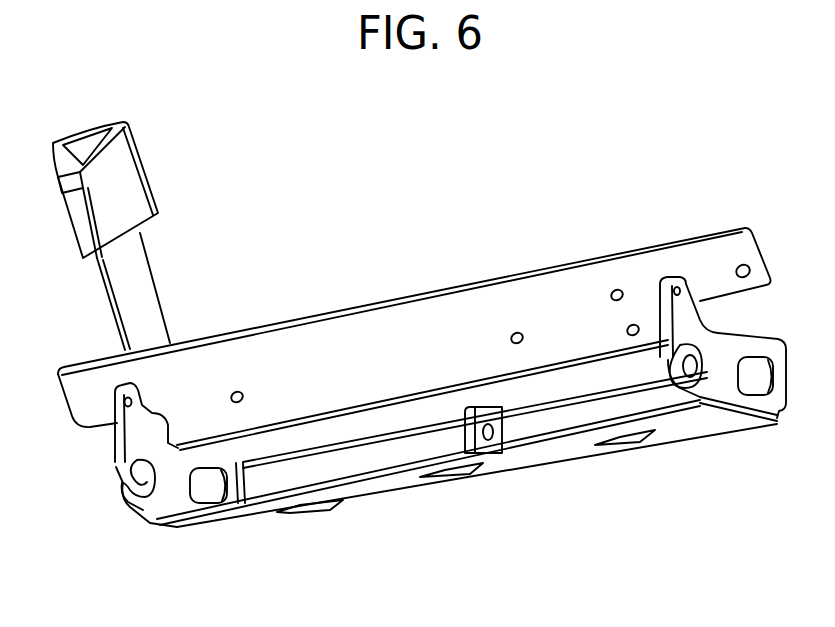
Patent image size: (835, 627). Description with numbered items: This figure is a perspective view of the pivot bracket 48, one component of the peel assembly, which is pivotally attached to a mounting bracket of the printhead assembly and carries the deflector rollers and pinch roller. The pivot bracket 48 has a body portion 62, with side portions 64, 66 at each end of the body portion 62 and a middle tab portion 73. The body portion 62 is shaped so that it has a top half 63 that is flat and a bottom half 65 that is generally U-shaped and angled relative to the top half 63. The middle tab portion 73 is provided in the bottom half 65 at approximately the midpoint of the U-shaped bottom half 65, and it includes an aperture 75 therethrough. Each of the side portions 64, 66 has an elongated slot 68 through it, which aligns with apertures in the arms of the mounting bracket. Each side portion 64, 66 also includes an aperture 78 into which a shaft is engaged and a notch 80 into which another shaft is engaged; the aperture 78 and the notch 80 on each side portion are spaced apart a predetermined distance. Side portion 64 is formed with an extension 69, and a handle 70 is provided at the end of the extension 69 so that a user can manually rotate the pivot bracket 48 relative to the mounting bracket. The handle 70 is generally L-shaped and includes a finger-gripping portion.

The pivot bracket 48 is at (435, 248).
The body portion 62 is at (380, 457).
The top half 63 is at (330, 347).
The side portion 64 is at (162, 498).
The bottom half 65 is at (573, 383).
The side portion 66 is at (722, 363).
The elongated slot 68 is at (747, 384).
The extension 69 is at (133, 290).
The handle 70 is at (120, 182).
The middle tab portion 73 is at (465, 430).
The aperture 75 is at (502, 437).
The aperture 78 is at (125, 380).
The notch 80 is at (137, 486).